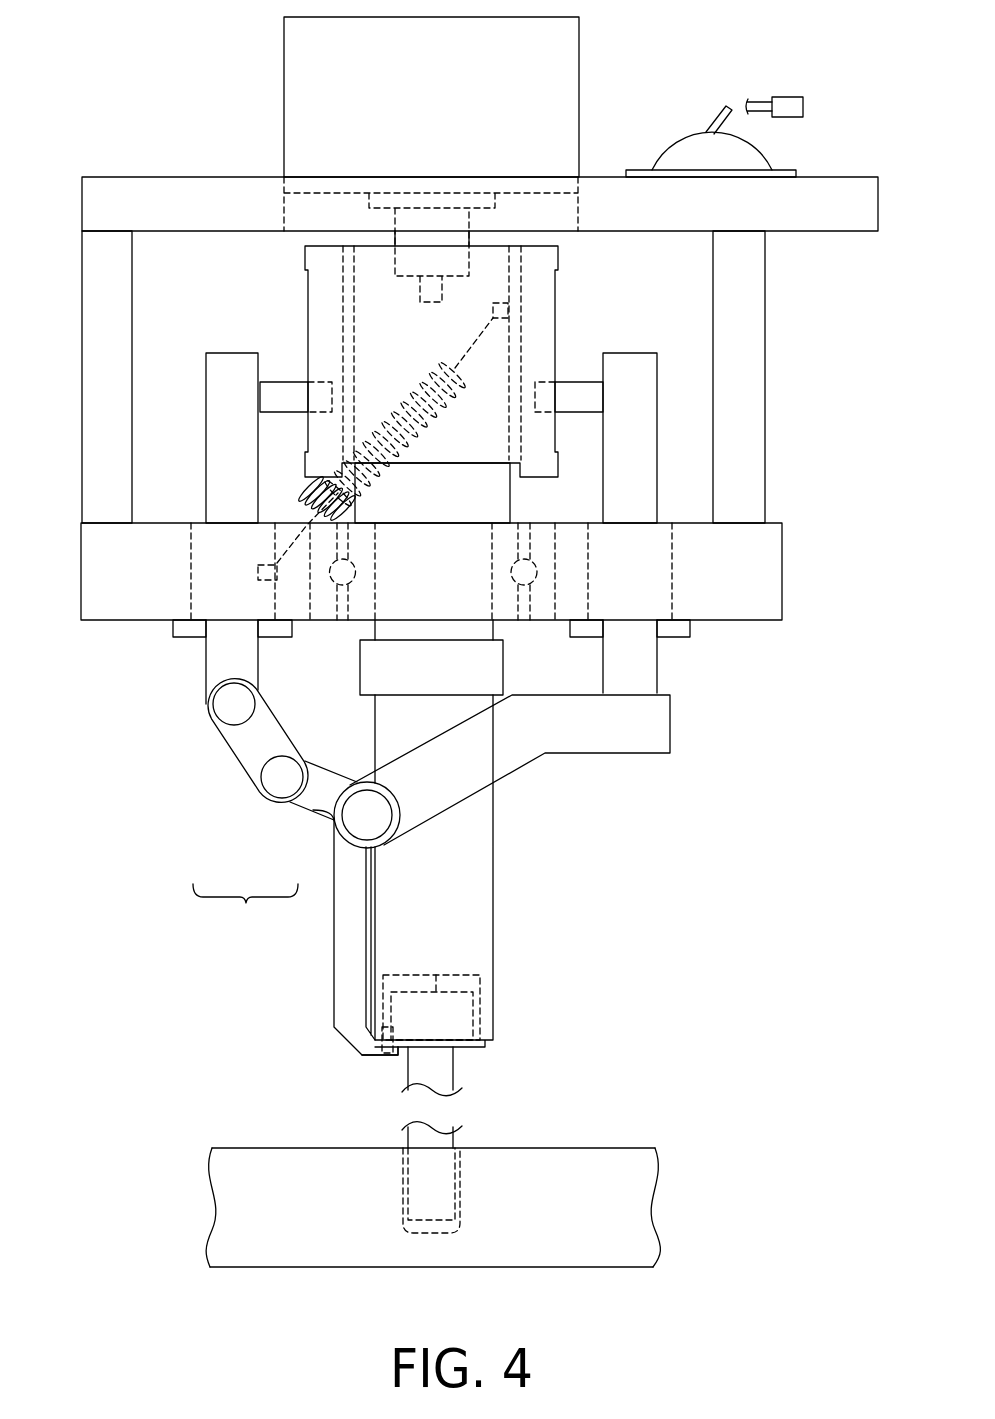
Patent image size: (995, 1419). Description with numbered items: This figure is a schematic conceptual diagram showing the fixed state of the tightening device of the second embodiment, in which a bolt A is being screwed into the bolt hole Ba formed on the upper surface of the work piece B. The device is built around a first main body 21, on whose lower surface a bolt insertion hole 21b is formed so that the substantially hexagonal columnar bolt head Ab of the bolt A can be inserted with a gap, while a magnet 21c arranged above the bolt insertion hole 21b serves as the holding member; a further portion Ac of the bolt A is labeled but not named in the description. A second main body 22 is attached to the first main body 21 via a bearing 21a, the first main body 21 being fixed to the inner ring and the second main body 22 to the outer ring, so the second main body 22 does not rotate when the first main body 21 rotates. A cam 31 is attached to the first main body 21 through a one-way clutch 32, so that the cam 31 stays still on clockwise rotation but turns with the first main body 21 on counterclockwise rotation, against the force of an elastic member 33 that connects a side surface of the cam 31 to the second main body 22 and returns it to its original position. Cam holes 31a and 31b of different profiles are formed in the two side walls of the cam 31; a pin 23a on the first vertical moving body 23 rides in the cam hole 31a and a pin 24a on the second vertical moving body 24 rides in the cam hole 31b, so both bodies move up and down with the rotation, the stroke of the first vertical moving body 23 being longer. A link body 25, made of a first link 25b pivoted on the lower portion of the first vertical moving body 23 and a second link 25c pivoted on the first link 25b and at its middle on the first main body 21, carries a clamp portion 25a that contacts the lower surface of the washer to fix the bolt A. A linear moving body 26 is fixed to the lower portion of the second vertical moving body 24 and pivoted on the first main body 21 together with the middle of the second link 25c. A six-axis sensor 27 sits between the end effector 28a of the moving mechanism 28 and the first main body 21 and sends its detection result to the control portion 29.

The first main body 21 is at (485, 842).
The bearing 21a is at (542, 613).
The bolt insertion hole 21b is at (390, 1052).
The magnet 21c is at (480, 982).
The second main body 22 is at (778, 546).
The first vertical moving body 23 is at (215, 385).
The pin 23a is at (286, 385).
The second vertical moving body 24 is at (647, 385).
The pin 24a is at (580, 385).
The link body 25 is at (296, 906).
The clamp portion 25a is at (398, 1056).
The first link 25b is at (253, 755).
The second link 25c is at (315, 808).
The linear moving body 26 is at (624, 743).
The sensor 27 is at (795, 175).
The moving mechanism 28 is at (717, 118).
The end effector 28a is at (673, 160).
The control portion 29 is at (798, 110).
The cam 31 is at (296, 292).
The cam hole 31a is at (315, 401).
The cam hole 31b is at (550, 393).
The one-way clutch 32 is at (515, 450).
The elastic member 33 is at (303, 498).
The bolt A is at (464, 1077).
The bolt head Ab is at (436, 980).
The flange portion Ac is at (480, 1042).
The work piece B is at (588, 1157).
The bolt hole Ba is at (450, 1185).